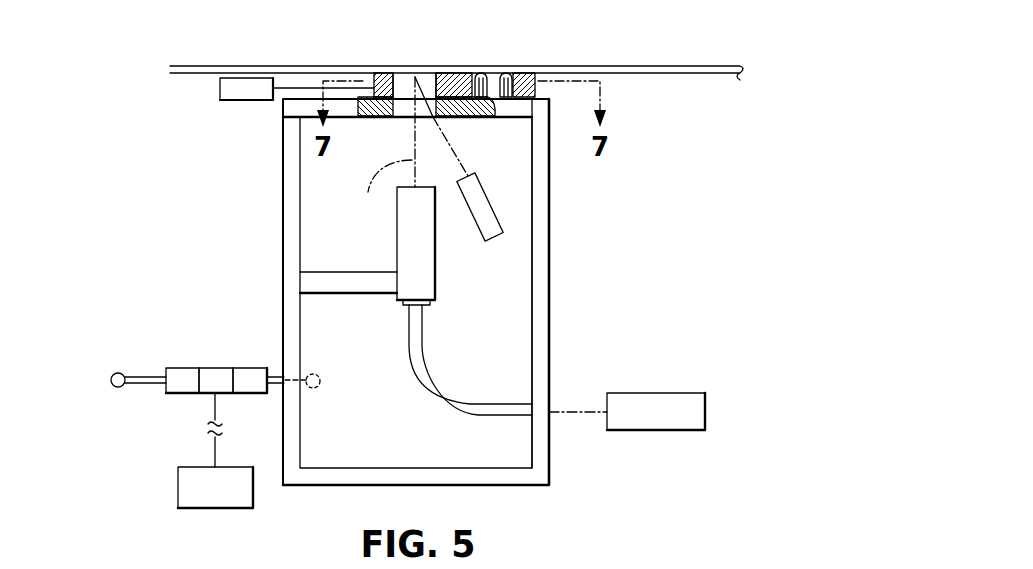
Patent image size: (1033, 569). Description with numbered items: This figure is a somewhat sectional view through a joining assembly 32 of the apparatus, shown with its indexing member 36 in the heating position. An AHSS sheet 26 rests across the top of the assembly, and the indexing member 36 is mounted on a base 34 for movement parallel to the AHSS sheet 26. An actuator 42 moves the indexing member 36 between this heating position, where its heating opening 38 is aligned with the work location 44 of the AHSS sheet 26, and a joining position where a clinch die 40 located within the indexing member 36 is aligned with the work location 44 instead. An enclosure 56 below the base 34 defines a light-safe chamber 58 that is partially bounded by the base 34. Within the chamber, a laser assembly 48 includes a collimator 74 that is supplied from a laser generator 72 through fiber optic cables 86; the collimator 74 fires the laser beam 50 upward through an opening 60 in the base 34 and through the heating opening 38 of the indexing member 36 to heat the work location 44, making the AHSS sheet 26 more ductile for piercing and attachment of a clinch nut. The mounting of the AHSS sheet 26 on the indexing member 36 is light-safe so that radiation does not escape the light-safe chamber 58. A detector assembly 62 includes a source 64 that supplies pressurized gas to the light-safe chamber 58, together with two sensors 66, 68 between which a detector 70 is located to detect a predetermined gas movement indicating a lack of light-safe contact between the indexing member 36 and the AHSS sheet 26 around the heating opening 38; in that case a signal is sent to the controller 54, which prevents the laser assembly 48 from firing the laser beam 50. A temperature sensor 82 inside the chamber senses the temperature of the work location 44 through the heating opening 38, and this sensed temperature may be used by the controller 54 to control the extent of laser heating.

The AHSS sheet 26 is at (648, 66).
The joining assembly 32 is at (563, 345).
The base 34 is at (549, 105).
The indexing member 36 is at (527, 73).
The heating opening 38 is at (407, 80).
The clinch die 40 is at (497, 73).
The actuator 42 is at (247, 100).
The work location 44 is at (418, 66).
The laser assembly 48 is at (437, 287).
The laser beam 50 is at (385, 147).
The controller 54 is at (203, 501).
The enclosure 56 is at (549, 248).
The light-safe chamber 58 is at (468, 336).
The opening 60 is at (400, 115).
The detector assembly 62 is at (212, 346).
The source 64 is at (120, 374).
The sensor 66 is at (183, 368).
The sensor 68 is at (253, 368).
The detector 70 is at (205, 388).
The laser generator 72 is at (657, 392).
The collimator 74 is at (435, 243).
The temperature sensor 82 is at (490, 200).
The fiber optic cables 86 is at (442, 403).